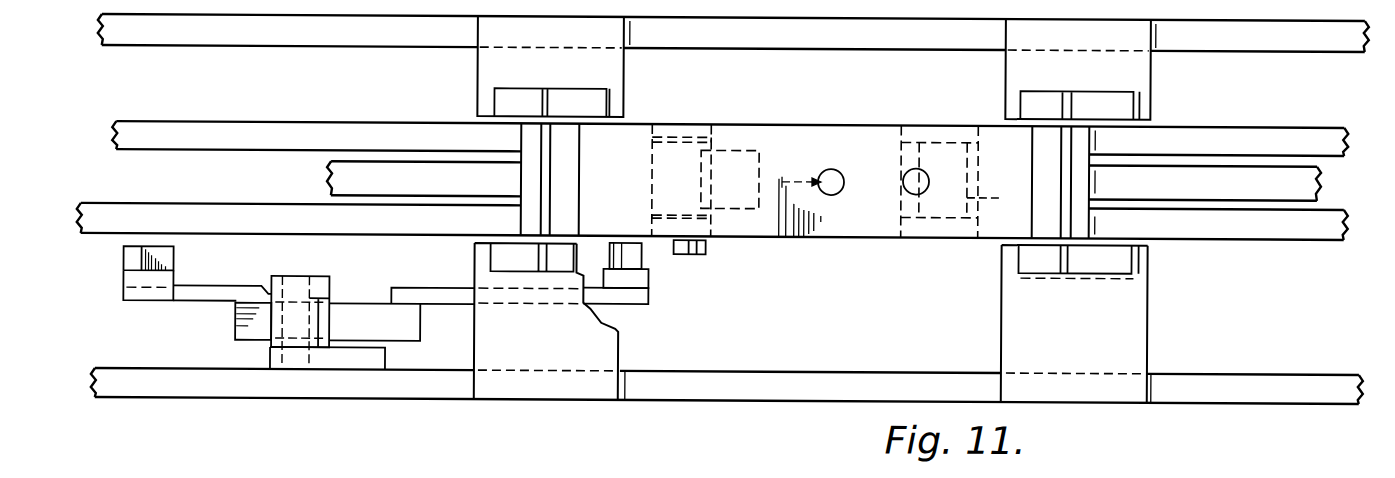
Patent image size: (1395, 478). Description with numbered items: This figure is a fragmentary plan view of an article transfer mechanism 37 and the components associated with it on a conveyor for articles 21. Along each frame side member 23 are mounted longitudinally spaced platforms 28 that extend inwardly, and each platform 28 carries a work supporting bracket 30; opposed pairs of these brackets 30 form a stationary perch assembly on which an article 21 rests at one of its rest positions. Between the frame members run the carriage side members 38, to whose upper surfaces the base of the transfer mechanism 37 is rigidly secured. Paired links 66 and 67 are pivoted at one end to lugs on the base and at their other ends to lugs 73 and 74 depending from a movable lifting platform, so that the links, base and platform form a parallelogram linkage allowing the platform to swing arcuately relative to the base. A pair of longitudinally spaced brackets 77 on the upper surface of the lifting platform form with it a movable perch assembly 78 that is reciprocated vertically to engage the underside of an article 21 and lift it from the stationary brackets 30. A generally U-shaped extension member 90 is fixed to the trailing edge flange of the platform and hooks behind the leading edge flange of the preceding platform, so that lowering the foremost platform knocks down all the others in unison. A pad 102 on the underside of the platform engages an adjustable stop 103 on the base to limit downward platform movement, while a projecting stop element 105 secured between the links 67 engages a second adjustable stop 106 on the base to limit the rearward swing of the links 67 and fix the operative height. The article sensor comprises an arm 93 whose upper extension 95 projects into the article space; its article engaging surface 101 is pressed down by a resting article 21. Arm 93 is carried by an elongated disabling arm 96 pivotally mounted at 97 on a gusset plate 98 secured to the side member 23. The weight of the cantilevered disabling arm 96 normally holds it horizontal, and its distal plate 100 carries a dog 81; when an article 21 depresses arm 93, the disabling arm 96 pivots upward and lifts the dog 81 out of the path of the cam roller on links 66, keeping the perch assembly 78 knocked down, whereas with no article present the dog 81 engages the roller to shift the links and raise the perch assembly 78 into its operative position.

The article 21 is at (850, 462).
The side member 23 is at (1332, 35).
The platform 28 is at (617, 56).
The work supporting bracket 30 is at (503, 82).
The article transfer mechanism 37 is at (876, 237).
The carriage side member 38 is at (1330, 140).
The link 66 is at (712, 122).
The link 67 is at (908, 106).
The lug 73 is at (657, 184).
The lug 74 is at (1007, 191).
The bracket 77 is at (562, 147).
The movable perch assembly 78 is at (735, 460).
The dog 81 is at (640, 255).
The extension member 90 is at (330, 171).
The arm 93 is at (209, 292).
The upper extension 95 is at (128, 280).
The disabling arm 96 is at (632, 298).
The pivot 97 is at (352, 262).
The gusset plate 98 is at (292, 325).
The plate 100 is at (647, 277).
The article engaging surface 101 is at (128, 256).
The pad 102 is at (745, 149).
The adjustable stop 103 is at (804, 173).
The projecting stop element 105 is at (903, 202).
The second adjustable stop 106 is at (902, 177).